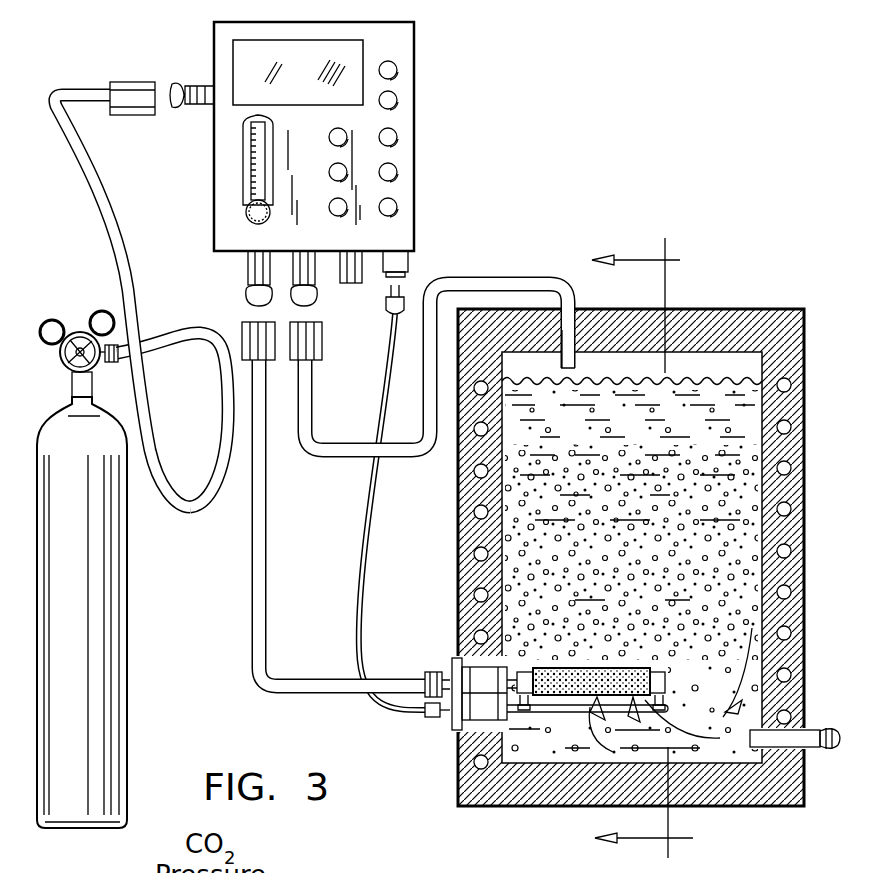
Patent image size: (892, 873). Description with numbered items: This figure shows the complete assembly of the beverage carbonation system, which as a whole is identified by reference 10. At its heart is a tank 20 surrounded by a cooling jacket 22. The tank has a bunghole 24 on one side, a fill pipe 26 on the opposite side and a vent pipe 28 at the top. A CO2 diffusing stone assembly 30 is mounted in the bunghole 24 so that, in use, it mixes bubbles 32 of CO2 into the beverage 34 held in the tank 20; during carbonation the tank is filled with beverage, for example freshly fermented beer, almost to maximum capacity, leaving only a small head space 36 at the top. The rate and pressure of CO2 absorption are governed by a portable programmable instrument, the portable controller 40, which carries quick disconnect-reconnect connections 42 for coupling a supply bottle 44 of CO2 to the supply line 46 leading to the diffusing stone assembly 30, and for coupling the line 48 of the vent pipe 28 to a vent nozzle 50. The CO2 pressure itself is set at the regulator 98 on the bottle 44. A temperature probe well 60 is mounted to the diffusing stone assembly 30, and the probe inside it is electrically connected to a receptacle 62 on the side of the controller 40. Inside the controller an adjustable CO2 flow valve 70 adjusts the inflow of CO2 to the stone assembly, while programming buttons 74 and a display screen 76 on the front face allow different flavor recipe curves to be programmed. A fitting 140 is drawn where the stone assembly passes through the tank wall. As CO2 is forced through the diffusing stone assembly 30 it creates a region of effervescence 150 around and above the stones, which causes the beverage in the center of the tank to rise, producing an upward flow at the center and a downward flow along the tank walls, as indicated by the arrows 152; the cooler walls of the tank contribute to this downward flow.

The carbonation system section line 10 is at (640, 548).
The tank 20 is at (740, 309).
The cooling jacket 22 is at (460, 511).
The bunghole 24 is at (460, 632).
The fill pipe 26 is at (823, 748).
The vent pipe 28 is at (576, 310).
The CO2 diffusing stone assembly 30 is at (668, 690).
The bubbles 32 is at (460, 560).
The beverage 34 is at (554, 807).
The head space 36 is at (704, 365).
The portable controller 40 is at (316, 136).
The quick disconnect-reconnect connections 42 is at (155, 117).
The supply bottle of CO2 44 is at (128, 585).
The supply line 46 is at (268, 512).
The line of the vent pipe 48 is at (363, 458).
The vent nozzle 50 is at (350, 283).
The temperature probe well 60 is at (460, 793).
The receptacle 62 is at (410, 262).
The adjustable CO2 flow valve 70 is at (243, 178).
The programming buttons 74 is at (397, 100).
The display screen 76 is at (263, 62).
The regulator 98 is at (80, 322).
The mounting flange 140 is at (462, 745).
The region of effervescence 150 is at (587, 660).
The arrows 152 is at (745, 663).